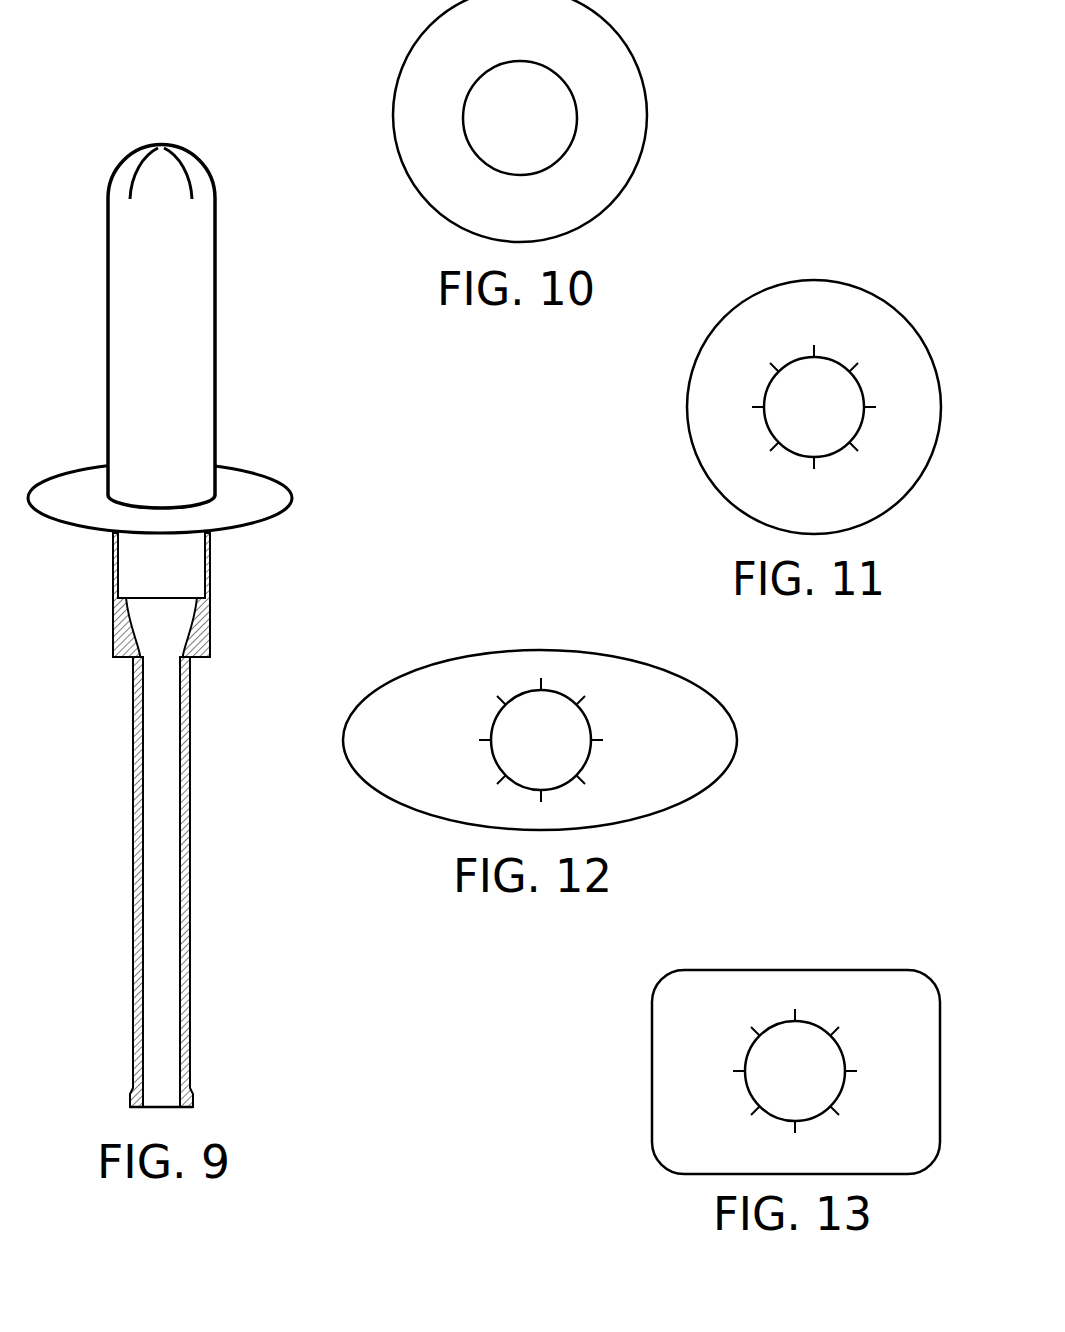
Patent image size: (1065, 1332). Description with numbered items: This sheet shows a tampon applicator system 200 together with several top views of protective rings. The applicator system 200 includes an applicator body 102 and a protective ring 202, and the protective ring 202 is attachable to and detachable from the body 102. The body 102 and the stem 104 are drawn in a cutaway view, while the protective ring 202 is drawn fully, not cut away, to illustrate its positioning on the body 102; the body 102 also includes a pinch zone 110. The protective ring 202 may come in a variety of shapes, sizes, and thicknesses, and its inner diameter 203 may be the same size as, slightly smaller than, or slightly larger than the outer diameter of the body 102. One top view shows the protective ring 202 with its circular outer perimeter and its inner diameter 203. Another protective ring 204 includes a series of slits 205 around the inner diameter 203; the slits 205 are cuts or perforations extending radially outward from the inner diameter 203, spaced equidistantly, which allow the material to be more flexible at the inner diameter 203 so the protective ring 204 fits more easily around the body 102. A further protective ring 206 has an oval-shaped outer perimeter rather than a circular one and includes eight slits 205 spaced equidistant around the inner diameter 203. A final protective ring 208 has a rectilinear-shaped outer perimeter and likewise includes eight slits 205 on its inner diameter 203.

In FIG. 9, the tampon applicator system 200 is at (141, 112).
In FIG. 9, the applicator body 102 is at (212, 262).
In FIG. 9, the protective ring 202 is at (262, 497).
In FIG. 10, the protective ring 202 is at (627, 80).
In FIG. 9, the pinch zone 110 is at (202, 587).
In FIG. 9, the stem 104 is at (178, 913).
In FIG. 10, the inner diameter 203 is at (573, 137).
In FIG. 11, the inner diameter 203 is at (776, 428).
In FIG. 12, the inner diameter 203 is at (563, 692).
In FIG. 13, the inner diameter 203 is at (747, 1053).
In FIG. 11, the protective ring 204 is at (837, 308).
In FIG. 11, the slits 205 is at (811, 350).
In FIG. 12, the slits 205 is at (538, 687).
In FIG. 13, the slits 205 is at (792, 1015).
In FIG. 12, the protective ring 206 is at (680, 737).
In FIG. 13, the protective ring 208 is at (837, 985).